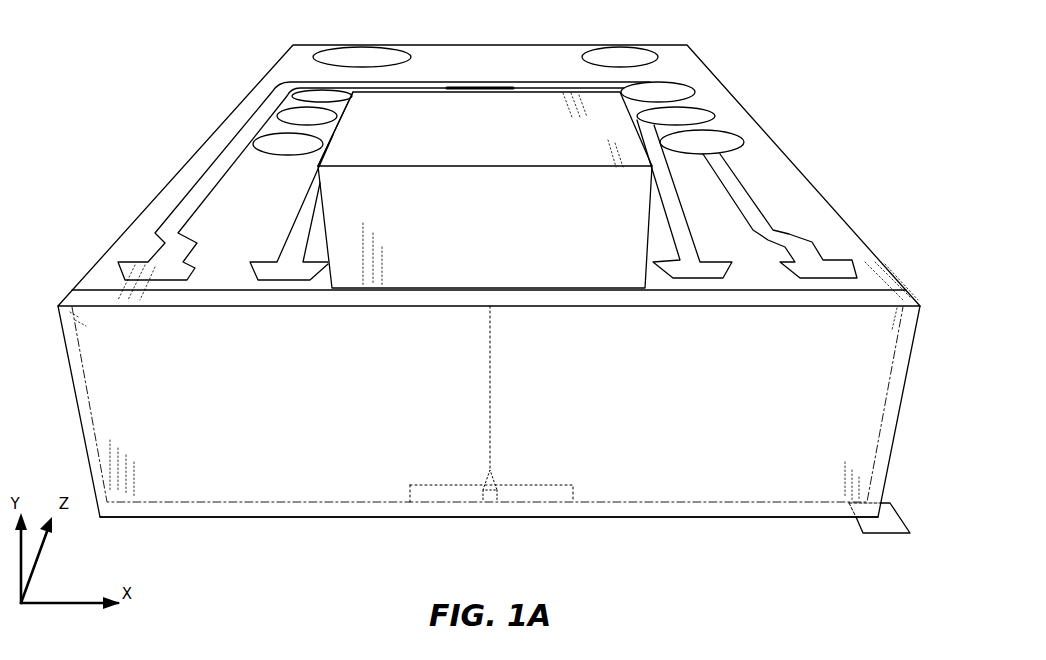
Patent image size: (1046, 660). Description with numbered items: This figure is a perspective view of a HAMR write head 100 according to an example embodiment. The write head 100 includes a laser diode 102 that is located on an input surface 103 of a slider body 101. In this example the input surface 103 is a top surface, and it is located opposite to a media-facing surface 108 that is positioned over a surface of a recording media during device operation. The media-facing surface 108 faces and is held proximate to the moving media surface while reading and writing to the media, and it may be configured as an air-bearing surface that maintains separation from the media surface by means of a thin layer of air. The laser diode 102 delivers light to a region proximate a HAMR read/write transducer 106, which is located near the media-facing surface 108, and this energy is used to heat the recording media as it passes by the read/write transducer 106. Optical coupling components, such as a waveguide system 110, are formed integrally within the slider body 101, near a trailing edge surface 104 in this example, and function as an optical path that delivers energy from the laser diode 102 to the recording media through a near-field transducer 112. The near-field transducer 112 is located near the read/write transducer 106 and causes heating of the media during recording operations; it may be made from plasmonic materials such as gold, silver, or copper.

The HAMR write head 100 is at (799, 114).
The slider body 101 is at (266, 72).
The laser diode 102 is at (443, 100).
The input surface 103 is at (130, 243).
The trailing edge surface 104 is at (168, 490).
The HAMR read/write transducer 106 is at (497, 503).
The media-facing surface 108 is at (898, 535).
The waveguide system 110 is at (490, 385).
The near-field transducer 112 is at (487, 503).